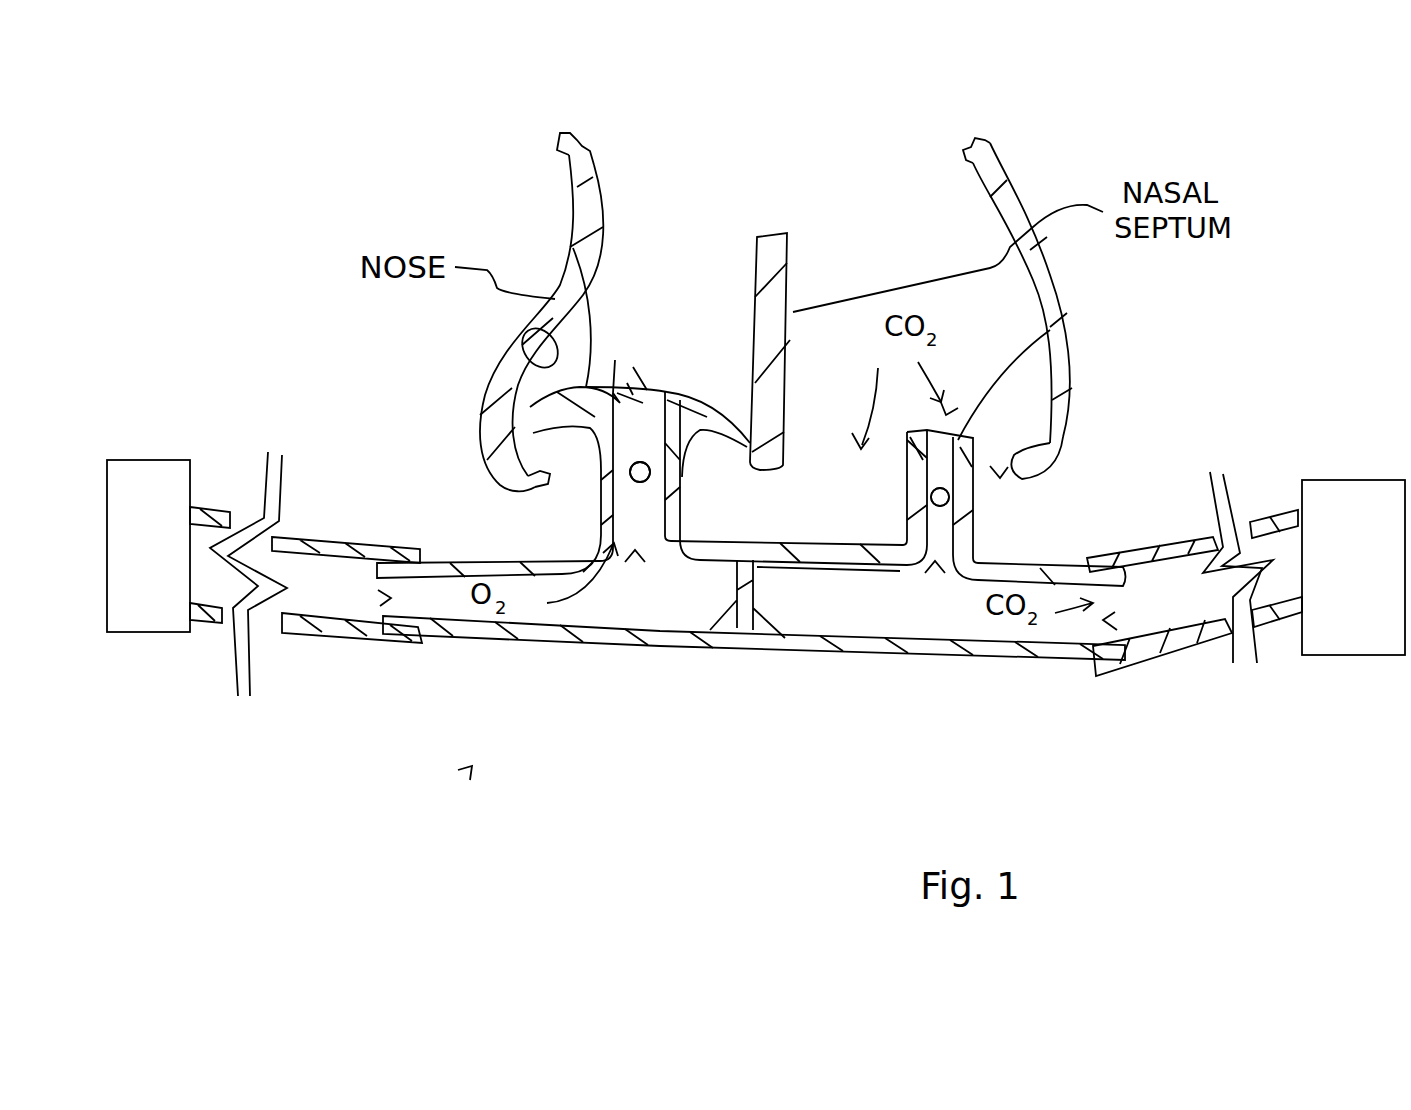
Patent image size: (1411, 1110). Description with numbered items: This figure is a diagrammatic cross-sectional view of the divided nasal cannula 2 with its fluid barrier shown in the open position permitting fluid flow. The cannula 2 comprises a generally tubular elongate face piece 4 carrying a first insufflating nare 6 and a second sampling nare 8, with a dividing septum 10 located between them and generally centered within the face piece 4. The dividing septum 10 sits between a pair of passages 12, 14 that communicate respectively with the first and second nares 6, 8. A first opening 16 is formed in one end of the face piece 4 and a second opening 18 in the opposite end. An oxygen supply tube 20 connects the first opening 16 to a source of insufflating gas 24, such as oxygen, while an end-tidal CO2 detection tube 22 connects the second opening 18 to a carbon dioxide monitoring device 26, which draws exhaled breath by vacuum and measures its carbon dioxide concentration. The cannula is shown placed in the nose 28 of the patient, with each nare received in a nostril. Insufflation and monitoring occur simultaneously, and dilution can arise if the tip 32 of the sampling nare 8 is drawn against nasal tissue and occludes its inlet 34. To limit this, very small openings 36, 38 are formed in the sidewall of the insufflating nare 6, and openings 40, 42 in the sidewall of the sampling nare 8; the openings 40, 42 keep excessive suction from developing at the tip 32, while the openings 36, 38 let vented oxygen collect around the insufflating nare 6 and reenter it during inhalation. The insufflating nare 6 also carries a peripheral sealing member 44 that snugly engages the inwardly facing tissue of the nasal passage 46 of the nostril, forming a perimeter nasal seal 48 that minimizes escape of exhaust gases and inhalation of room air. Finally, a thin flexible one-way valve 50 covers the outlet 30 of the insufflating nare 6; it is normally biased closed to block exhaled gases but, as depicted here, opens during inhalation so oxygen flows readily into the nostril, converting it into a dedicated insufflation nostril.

The nasal cannula 2 is at (470, 768).
The face piece 4 is at (793, 652).
The first insufflating nare 6 is at (590, 503).
The second sampling nare 8 is at (973, 527).
The dividing septum 10 is at (707, 633).
The passage 12 is at (635, 552).
The passage 14 is at (935, 562).
The first opening 16 is at (390, 598).
The second opening 18 is at (1105, 620).
The oxygen supply tube 20 is at (350, 538).
The end-tidal CO2 detection tube 22 is at (1157, 542).
The source of insufflating gas 24 is at (155, 634).
The carbon dioxide monitoring device 26 is at (1340, 656).
The nasal wall 28 is at (573, 247).
The outlet 30 is at (610, 417).
The tip 32 is at (1000, 477).
The inlet 34 is at (947, 413).
The opening 36 is at (650, 471).
The opening 38 is at (640, 472).
The opening 40 is at (949, 497).
The opening 42 is at (940, 497).
The peripheral sealing member 44 is at (545, 412).
The nasal passage 46 is at (530, 332).
The perimeter nasal seal 48 is at (507, 489).
The one-way valve 50 is at (655, 380).